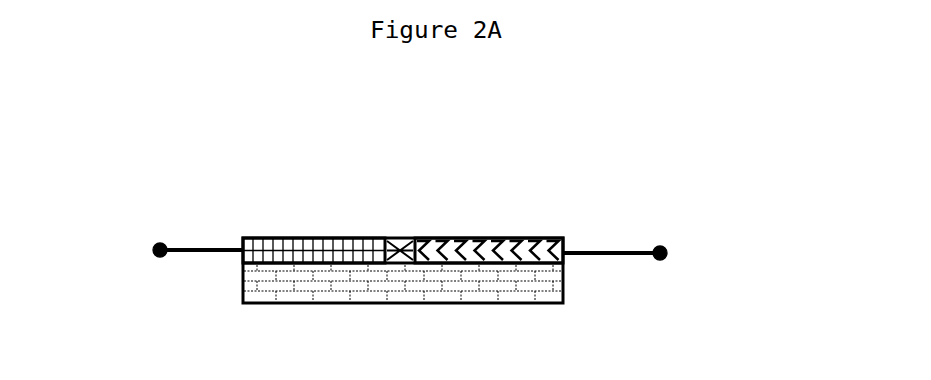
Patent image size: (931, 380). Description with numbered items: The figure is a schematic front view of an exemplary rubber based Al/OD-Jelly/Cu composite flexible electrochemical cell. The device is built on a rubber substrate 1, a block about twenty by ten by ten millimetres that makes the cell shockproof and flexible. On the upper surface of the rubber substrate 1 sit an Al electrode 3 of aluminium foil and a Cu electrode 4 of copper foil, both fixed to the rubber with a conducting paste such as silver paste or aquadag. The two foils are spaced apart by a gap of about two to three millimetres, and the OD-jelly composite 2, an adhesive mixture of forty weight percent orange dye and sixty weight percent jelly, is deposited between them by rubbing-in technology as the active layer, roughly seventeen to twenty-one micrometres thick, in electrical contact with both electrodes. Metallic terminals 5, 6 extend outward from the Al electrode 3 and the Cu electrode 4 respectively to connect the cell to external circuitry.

The rubber substrate 1 is at (565, 290).
The OD-jelly composite 2 is at (400, 238).
The Al electrode 3 is at (278, 238).
The Cu electrode 4 is at (507, 238).
The metallic terminal 5 is at (174, 249).
The metallic terminal 6 is at (636, 254).